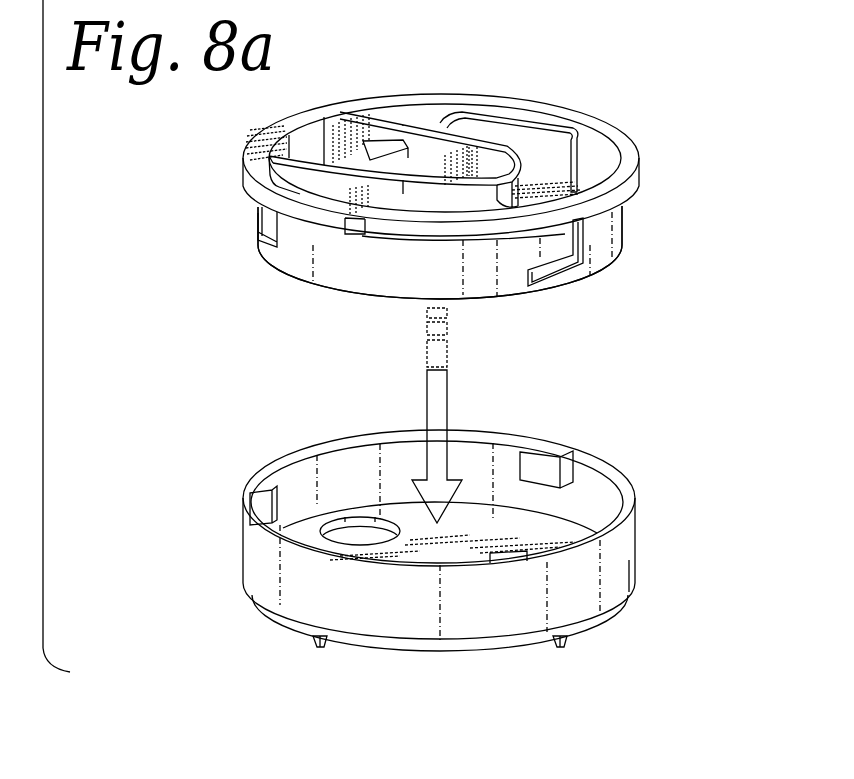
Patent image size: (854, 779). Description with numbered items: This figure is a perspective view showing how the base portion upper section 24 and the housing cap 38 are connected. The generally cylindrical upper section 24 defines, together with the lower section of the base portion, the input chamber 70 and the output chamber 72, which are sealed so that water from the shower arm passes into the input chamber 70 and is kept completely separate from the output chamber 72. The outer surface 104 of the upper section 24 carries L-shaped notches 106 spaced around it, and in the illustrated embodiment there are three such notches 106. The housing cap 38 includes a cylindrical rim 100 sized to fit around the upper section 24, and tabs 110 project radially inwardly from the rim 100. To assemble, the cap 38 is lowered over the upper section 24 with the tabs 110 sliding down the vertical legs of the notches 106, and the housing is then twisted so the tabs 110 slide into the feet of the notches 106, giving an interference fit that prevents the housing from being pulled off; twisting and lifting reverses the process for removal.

The base portion upper section 24 is at (625, 227).
The input chamber 70 is at (340, 133).
The output chamber 72 is at (523, 147).
The outer surface 104 is at (347, 272).
The L-shaped notches 106 is at (263, 213).
The housing cap 38 is at (625, 555).
The cylindrical rim 100 is at (300, 483).
The tabs 110 is at (243, 495).